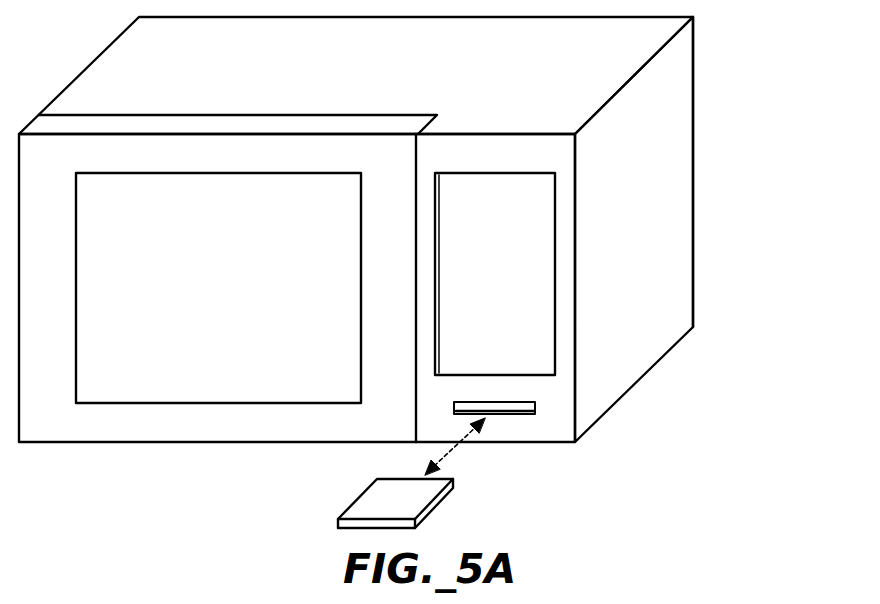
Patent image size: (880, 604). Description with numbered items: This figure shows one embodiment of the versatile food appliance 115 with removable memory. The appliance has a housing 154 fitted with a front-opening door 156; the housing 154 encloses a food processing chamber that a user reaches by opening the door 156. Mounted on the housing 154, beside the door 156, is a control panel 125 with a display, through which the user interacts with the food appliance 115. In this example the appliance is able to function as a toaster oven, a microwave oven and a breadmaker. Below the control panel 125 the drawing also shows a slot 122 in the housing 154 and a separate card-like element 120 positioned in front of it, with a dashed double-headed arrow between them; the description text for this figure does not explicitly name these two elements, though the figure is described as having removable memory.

The versatile food appliance 115 is at (716, 60).
The housing 154 is at (682, 249).
The front-opening door 156 is at (78, 124).
The control panel 125 is at (533, 212).
The card slot 122 is at (533, 408).
The memory card 120 is at (357, 497).